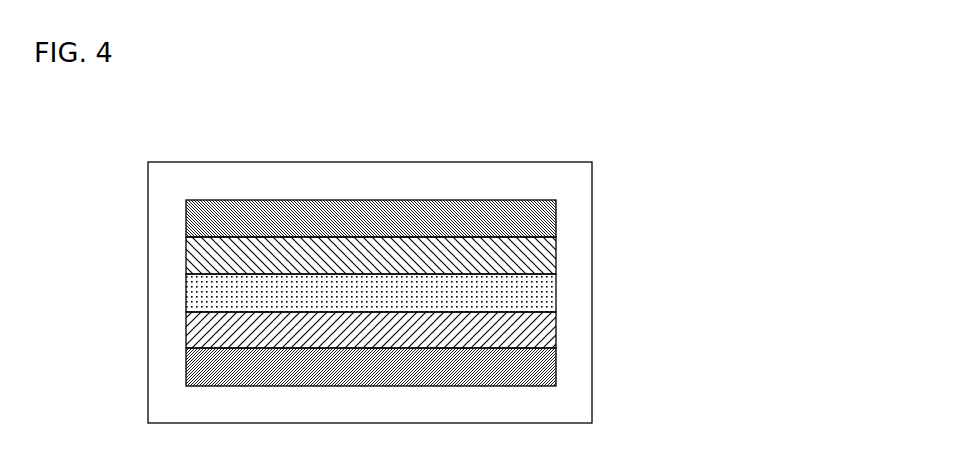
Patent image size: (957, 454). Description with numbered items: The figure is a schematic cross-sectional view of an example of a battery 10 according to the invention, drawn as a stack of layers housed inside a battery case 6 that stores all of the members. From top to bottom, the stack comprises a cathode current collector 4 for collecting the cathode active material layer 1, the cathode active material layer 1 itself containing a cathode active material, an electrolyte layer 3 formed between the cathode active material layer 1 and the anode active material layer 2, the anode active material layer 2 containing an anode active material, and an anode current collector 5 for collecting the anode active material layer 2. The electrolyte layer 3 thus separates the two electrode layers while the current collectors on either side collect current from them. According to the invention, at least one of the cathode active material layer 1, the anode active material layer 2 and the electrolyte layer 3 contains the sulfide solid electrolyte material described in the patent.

The battery 10 is at (579, 126).
The battery case 6 is at (572, 176).
The cathode current collector 4 is at (545, 211).
The cathode active material layer 1 is at (545, 247).
The electrolyte layer 3 is at (545, 285).
The anode active material layer 2 is at (545, 321).
The anode current collector 5 is at (545, 358).